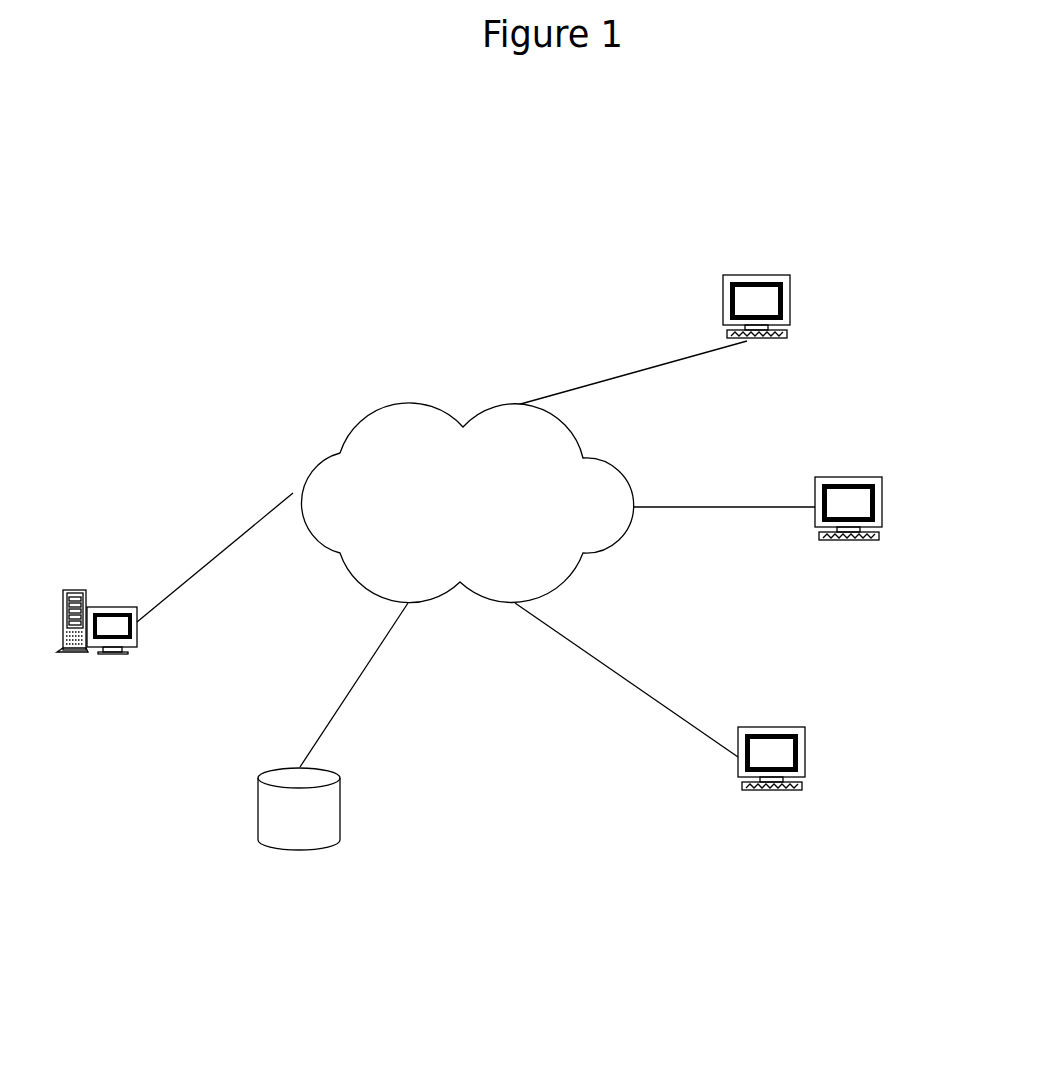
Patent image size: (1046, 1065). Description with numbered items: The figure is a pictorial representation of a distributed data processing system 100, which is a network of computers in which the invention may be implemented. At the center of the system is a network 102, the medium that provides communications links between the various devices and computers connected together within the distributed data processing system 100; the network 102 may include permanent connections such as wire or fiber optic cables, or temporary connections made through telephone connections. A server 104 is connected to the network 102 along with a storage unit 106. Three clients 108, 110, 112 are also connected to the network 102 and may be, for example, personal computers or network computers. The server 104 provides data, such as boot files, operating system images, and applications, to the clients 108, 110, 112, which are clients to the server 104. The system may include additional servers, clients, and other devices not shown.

The distributed data processing system 100 is at (490, 863).
The network 102 is at (478, 514).
The server 104 is at (115, 607).
The storage unit 106 is at (298, 848).
The client 108 is at (753, 277).
The client 110 is at (848, 477).
The client 112 is at (772, 793).